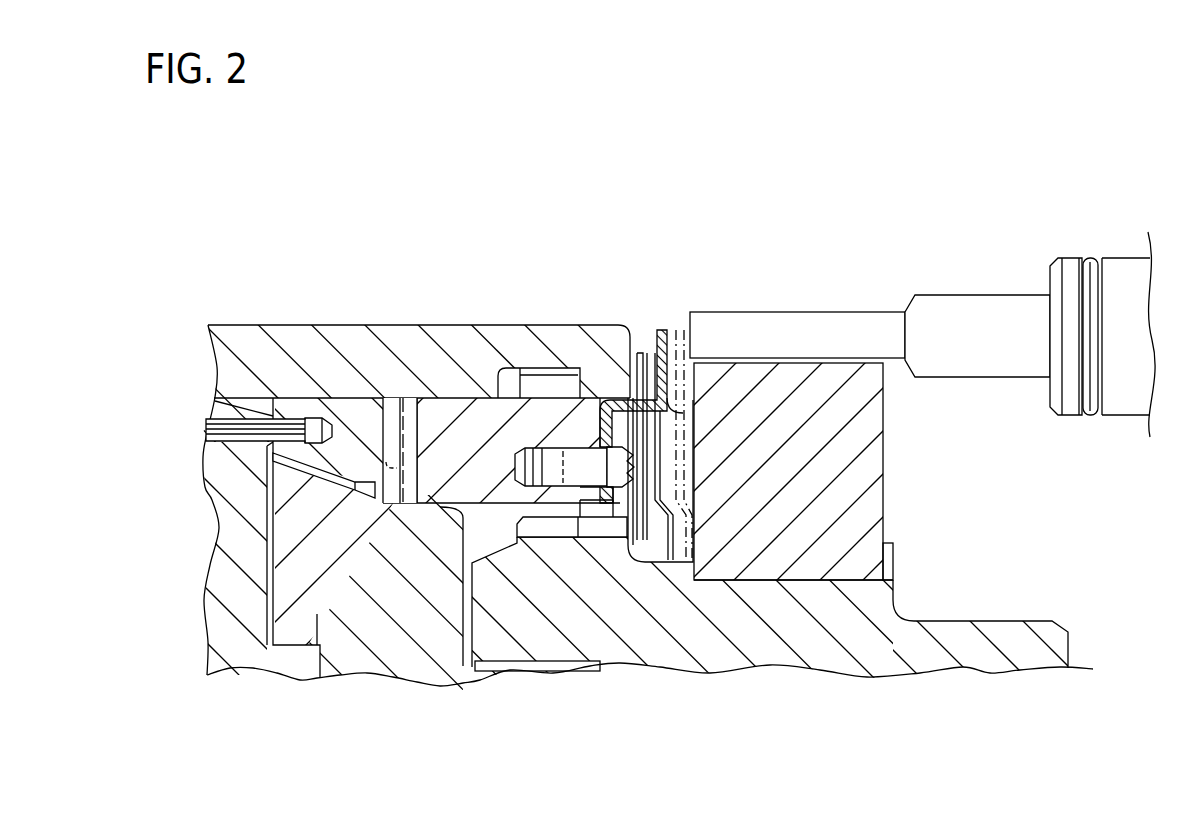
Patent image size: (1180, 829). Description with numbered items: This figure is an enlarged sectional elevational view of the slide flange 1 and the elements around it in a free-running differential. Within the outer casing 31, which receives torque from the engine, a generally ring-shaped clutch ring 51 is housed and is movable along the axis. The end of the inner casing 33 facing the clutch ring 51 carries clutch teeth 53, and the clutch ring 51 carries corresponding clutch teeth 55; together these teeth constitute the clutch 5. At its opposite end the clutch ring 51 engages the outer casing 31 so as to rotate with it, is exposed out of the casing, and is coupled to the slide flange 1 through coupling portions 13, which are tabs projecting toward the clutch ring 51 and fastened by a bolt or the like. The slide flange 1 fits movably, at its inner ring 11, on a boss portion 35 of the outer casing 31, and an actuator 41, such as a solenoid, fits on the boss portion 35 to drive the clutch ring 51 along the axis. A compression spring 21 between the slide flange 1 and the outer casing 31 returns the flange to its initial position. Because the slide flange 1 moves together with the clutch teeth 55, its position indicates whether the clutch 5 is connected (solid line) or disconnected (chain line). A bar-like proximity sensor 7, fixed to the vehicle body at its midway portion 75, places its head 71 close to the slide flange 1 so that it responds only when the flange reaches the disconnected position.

The slide flange 1 is at (661, 330).
The clutch 5 is at (438, 282).
The proximity sensor 7 is at (938, 190).
The inner ring 11 is at (663, 563).
The coupling portion 13 is at (617, 500).
The compression spring 21 is at (640, 352).
The outer casing 31 is at (317, 397).
The inner casing 33 is at (300, 396).
The boss portion 35 is at (937, 620).
The actuator 41 is at (884, 455).
The clutch ring 51 is at (465, 447).
The clutch teeth 53 is at (382, 395).
The clutch teeth 55 is at (400, 397).
The head 71 is at (785, 312).
The midway portion 75 is at (1120, 258).